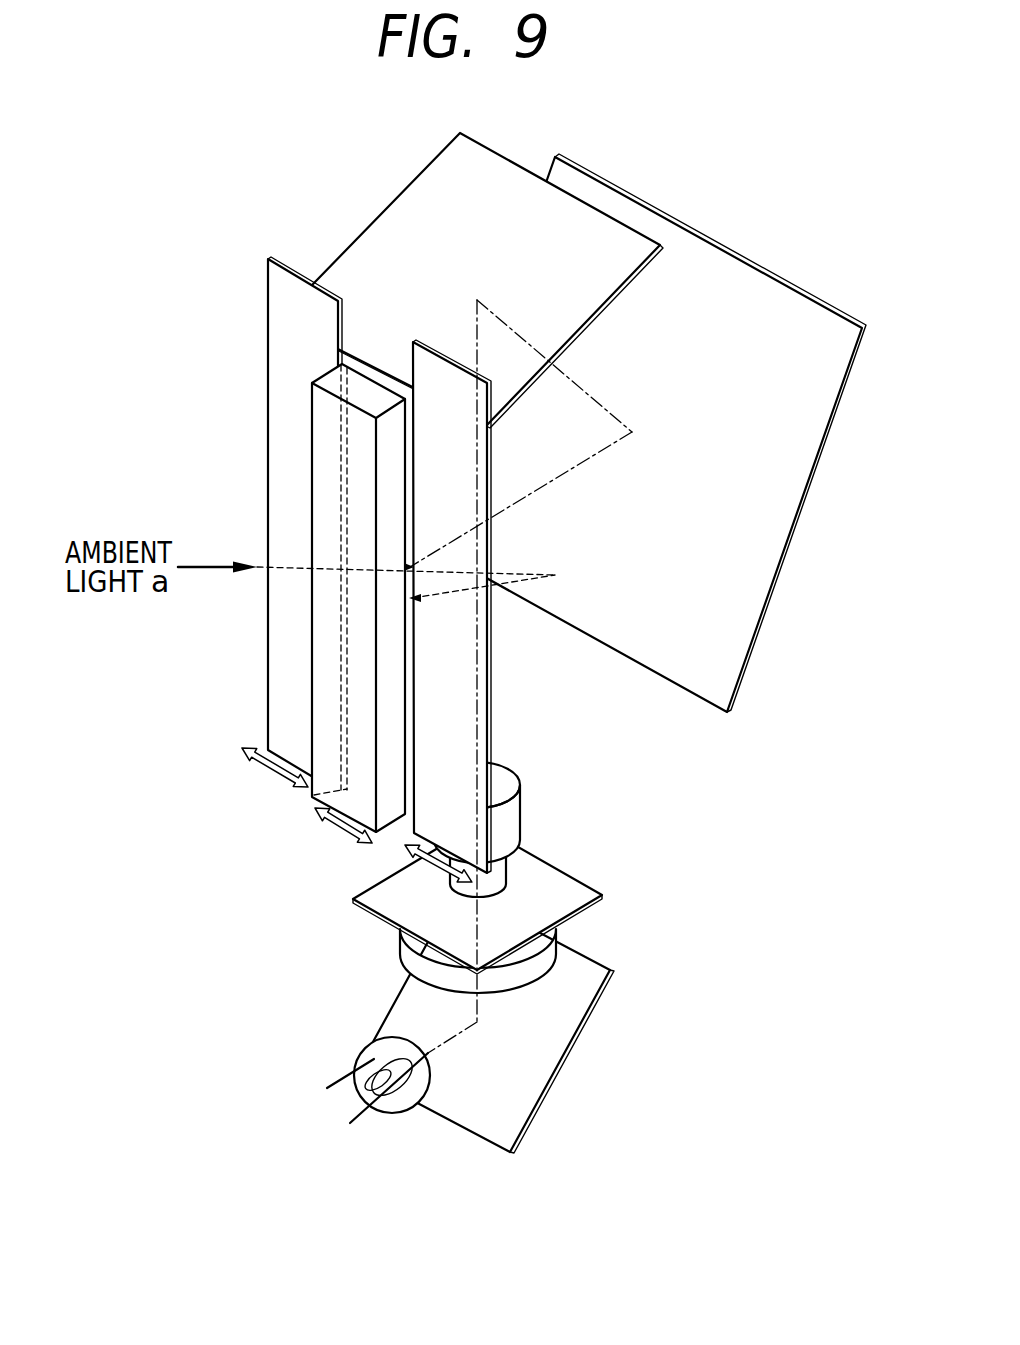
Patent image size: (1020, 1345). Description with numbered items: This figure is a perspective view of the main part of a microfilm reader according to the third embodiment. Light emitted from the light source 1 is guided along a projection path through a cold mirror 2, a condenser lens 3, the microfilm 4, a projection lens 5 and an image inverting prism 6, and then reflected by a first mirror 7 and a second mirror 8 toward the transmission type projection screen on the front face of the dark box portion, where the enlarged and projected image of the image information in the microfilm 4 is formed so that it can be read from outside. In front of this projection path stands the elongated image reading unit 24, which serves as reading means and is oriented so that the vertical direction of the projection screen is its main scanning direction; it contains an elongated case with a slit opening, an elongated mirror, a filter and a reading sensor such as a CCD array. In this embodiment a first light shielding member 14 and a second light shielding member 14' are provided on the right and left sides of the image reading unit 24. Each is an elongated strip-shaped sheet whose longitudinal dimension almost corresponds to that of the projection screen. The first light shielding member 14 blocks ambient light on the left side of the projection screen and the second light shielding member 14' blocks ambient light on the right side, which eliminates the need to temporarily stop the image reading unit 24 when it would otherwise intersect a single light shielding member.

The light source 1 is at (367, 1056).
The cold mirror 2 is at (538, 1063).
The condenser lens 3 is at (543, 958).
The microfilm 4 is at (573, 890).
The projection lens 5 is at (503, 868).
The image inverting prism 6 is at (497, 770).
The first mirror 7 is at (430, 198).
The second mirror 8 is at (772, 503).
The first light shielding member 14 is at (272, 524).
The second light shielding member 14' is at (491, 606).
The image reading unit 24 is at (356, 388).